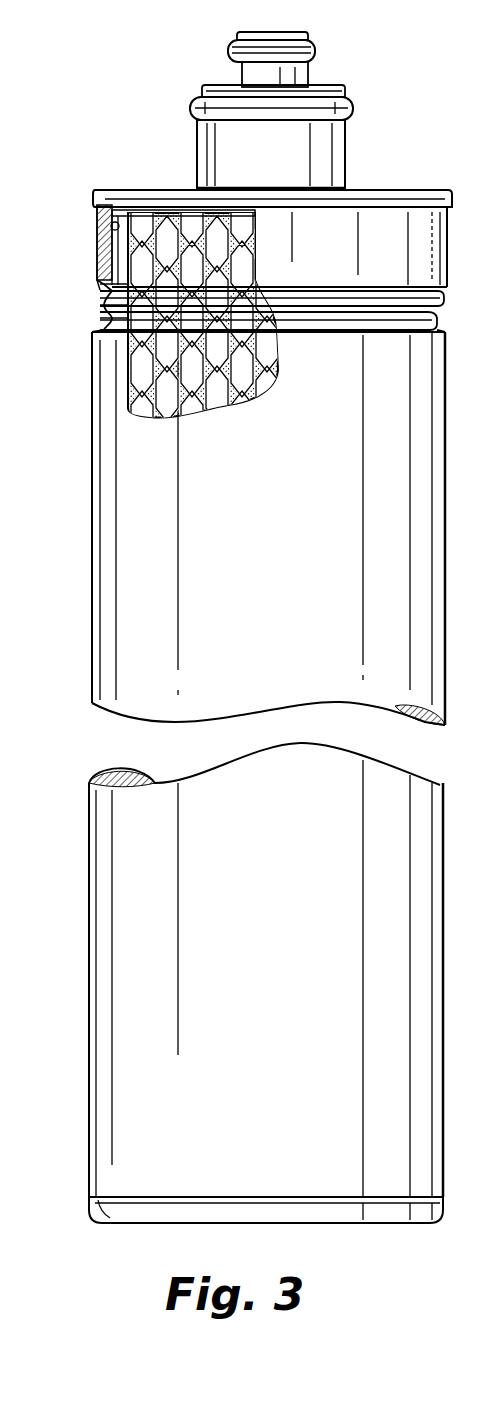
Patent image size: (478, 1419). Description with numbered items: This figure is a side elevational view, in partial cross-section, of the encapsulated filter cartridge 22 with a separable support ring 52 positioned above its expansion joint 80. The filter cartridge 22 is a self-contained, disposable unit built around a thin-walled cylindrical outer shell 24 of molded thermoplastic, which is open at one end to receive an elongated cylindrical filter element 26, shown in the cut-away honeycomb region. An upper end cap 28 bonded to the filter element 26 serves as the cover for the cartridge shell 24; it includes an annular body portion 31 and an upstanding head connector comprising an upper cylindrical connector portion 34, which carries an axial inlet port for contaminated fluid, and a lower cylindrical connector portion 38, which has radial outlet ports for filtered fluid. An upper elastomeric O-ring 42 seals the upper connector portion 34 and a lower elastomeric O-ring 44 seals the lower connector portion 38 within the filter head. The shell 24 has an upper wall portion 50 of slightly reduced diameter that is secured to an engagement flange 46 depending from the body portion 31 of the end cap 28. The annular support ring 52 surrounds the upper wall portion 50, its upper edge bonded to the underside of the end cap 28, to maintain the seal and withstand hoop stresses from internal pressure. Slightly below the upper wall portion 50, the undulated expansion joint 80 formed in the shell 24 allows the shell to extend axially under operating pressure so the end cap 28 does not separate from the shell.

The encapsulated filter cartridge 22 is at (107, 95).
The cylindrical outer shell 24 is at (278, 489).
The filter element 26 is at (130, 385).
The upper end cap 28 is at (370, 172).
The annular body portion 31 is at (98, 190).
The upper cylindrical connector portion 34 is at (243, 76).
The lower cylindrical connector portion 38 is at (327, 142).
The upper elastomeric O-ring 42 is at (313, 52).
The lower elastomeric O-ring 44 is at (357, 105).
The engagement flange 46 is at (130, 210).
The upper wall portion 50 is at (96, 220).
The annular support ring 52 is at (97, 242).
The expansion joint 80 is at (86, 298).